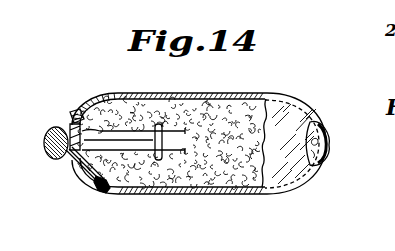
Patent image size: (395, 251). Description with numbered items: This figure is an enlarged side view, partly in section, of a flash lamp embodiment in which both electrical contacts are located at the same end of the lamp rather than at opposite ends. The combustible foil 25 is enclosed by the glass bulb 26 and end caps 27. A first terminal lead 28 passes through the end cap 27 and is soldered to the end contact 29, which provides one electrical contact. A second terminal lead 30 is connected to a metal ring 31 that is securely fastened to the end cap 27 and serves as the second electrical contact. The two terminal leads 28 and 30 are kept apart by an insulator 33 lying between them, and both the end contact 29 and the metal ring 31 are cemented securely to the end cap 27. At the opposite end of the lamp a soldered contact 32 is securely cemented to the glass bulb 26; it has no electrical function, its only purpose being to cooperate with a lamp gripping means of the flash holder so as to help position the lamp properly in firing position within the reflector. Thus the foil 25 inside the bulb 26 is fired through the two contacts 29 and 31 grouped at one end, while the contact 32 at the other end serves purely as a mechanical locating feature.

The foil 25 is at (169, 196).
The glass bulb 26 is at (228, 195).
The end cap 27 is at (73, 112).
The terminal lead 28 is at (130, 93).
The end contact 29 is at (46, 151).
The terminal lead 30 is at (76, 180).
The metal ring 31 is at (107, 196).
The soldered contact 32 is at (325, 145).
The insulator 33 is at (167, 95).